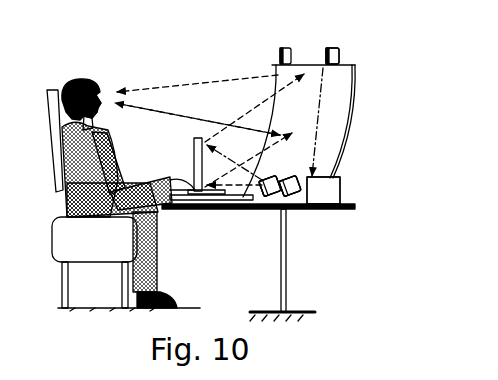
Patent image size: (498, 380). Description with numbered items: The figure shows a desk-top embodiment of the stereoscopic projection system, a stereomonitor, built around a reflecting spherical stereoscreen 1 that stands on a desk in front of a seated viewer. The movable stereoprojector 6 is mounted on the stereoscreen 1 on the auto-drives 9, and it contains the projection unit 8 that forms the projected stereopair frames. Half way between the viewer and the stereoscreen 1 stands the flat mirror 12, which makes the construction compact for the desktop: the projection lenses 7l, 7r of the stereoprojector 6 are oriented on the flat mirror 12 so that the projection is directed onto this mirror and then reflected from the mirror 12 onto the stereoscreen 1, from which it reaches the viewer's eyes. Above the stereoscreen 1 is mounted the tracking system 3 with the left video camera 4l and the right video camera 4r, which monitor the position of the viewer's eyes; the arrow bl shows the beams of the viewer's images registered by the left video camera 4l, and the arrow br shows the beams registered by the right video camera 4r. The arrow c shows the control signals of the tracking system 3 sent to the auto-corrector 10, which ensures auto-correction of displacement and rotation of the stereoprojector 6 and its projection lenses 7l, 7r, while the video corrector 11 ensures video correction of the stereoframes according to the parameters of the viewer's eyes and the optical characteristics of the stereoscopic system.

The reflecting spherical stereoscreen 1 is at (358, 95).
The tracking system 3 is at (333, 47).
The left video camera 4l is at (280, 56).
The right video camera 4r is at (340, 53).
The beams registered by the left video camera bl is at (273, 60).
The beams registered by the right video camera br is at (322, 53).
The control signals of the tracking system c is at (322, 122).
The auto-corrector 10 is at (330, 191).
The video corrector 11 is at (323, 190).
The flat mirror 12 is at (195, 152).
The stereoprojector 6 is at (262, 188).
The left projection lens 7l is at (270, 185).
The right projection lens 7r is at (290, 185).
The projection unit 8 is at (270, 185).
The auto-drives 9 is at (290, 185).